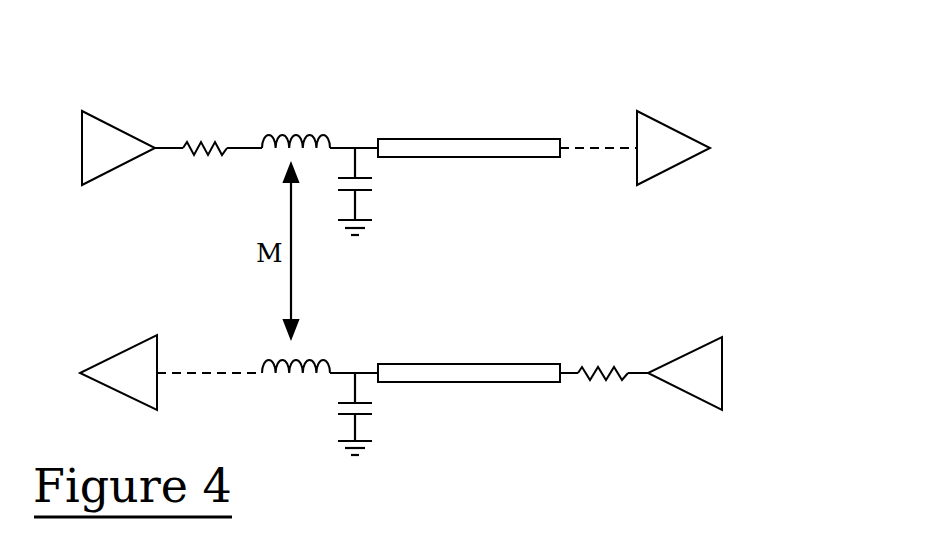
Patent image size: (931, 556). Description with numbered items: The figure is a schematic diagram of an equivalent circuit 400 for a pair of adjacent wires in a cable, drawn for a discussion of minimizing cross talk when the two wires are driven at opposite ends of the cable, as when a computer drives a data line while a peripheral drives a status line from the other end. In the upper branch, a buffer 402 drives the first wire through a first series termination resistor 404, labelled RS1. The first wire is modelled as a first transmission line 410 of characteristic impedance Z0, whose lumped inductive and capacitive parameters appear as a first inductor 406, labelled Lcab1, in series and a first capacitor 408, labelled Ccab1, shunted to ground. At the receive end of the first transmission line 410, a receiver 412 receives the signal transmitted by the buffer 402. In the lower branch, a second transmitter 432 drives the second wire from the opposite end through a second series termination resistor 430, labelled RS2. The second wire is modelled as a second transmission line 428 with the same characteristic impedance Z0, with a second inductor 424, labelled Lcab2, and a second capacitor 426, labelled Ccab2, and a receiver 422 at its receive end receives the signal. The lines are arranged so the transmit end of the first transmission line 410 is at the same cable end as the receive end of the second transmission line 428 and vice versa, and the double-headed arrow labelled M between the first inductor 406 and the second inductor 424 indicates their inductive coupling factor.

The equivalent circuit 400 is at (763, 60).
The buffer 402 is at (112, 120).
The first series termination resistor 404 is at (193, 151).
The first inductor 406 is at (333, 131).
The first capacitor 408 is at (362, 192).
The first transmission line 410 is at (517, 158).
The receiver 412 is at (670, 118).
The receiver 422 is at (122, 348).
The second inductor 424 is at (330, 358).
The second capacitor 426 is at (362, 416).
The second transmission line 428 is at (498, 383).
The second series termination resistor 430 is at (607, 381).
The second transmitter 432 is at (690, 352).